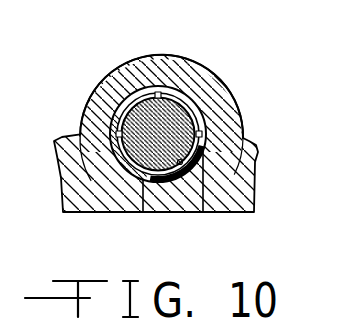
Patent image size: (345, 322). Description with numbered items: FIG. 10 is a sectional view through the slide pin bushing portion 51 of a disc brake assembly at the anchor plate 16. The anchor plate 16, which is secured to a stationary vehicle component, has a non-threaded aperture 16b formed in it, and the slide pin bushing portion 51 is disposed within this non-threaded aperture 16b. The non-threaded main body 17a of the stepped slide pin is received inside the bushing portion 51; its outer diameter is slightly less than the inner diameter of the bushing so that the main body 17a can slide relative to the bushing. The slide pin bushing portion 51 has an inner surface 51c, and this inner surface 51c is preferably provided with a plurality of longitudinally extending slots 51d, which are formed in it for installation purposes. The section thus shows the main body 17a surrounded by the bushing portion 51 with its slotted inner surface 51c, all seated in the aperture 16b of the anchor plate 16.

The anchor plate 16 is at (130, 69).
The non-threaded aperture 16b is at (198, 110).
The main body 17a is at (170, 118).
The slide pin bushing portion 51 is at (210, 142).
The inner surface 51c is at (203, 212).
The longitudinally extending slots 51d is at (84, 100).